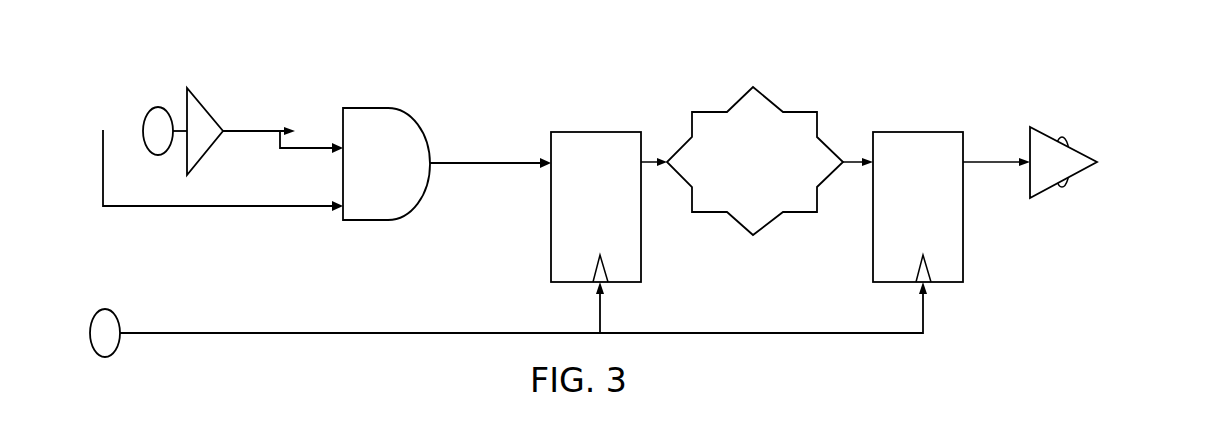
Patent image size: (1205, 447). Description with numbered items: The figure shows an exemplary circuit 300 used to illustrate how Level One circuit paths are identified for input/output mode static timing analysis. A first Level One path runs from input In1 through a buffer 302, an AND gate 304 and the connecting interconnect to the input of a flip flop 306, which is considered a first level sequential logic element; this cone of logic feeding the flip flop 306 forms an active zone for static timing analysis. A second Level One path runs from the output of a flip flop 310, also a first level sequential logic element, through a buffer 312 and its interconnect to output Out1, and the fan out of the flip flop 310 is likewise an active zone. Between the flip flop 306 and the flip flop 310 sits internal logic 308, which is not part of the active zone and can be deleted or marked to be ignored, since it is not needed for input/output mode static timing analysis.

The circuit 300 is at (121, 59).
The buffer 302 is at (203, 107).
The AND gate 304 is at (370, 108).
The flip flop 306 is at (593, 132).
The internal logic 308 is at (792, 110).
The flip flop 310 is at (917, 132).
The buffer 312 is at (1068, 148).